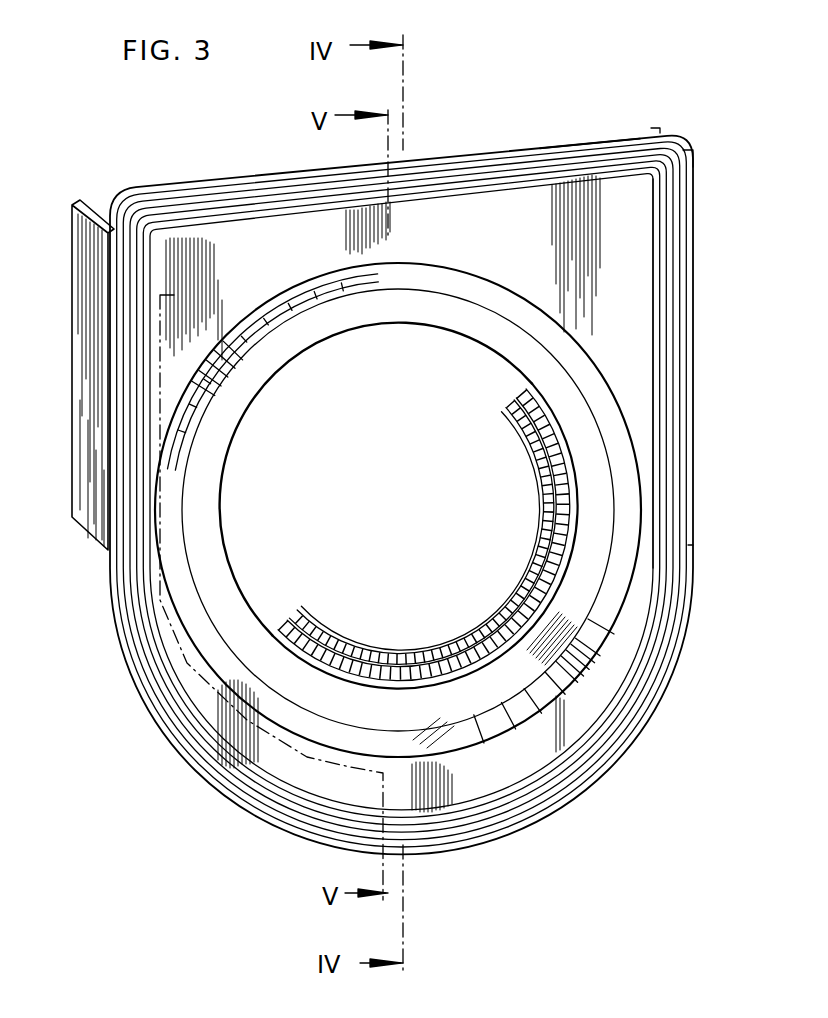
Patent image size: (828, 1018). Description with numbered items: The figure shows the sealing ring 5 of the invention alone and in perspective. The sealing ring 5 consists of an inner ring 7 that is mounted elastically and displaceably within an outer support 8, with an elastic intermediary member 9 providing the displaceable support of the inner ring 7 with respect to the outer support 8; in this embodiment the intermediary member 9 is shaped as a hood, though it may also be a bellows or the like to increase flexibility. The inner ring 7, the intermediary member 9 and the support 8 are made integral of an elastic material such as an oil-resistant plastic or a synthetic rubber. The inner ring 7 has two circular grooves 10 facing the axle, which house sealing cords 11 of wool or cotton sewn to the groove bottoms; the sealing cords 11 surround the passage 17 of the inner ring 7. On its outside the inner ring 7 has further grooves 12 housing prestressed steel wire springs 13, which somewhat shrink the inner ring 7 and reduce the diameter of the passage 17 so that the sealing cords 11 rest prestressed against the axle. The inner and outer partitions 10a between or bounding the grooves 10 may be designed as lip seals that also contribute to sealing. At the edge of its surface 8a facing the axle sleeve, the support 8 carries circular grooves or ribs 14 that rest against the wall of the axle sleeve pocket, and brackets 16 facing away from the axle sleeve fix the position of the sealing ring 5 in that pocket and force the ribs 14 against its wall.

The sealing ring 5 is at (218, 184).
The inner ring 7 is at (603, 500).
The outer support 8 is at (636, 316).
The surface 8a is at (643, 241).
The elastic intermediary member 9 is at (610, 420).
The circular grooves 10 is at (460, 632).
The inner and outer partitions 10a is at (545, 558).
The sealing cords 11 is at (520, 602).
The further grooves 12 is at (257, 340).
The steel wire springs 13 is at (198, 406).
The circular grooves or ribs 14 is at (572, 152).
The brackets 16 is at (83, 276).
The passage 17 is at (250, 603).